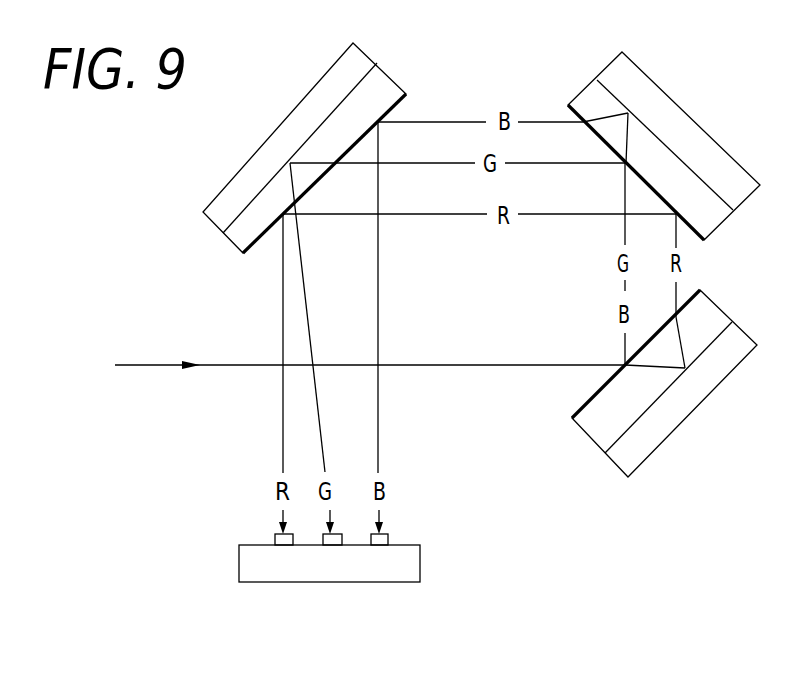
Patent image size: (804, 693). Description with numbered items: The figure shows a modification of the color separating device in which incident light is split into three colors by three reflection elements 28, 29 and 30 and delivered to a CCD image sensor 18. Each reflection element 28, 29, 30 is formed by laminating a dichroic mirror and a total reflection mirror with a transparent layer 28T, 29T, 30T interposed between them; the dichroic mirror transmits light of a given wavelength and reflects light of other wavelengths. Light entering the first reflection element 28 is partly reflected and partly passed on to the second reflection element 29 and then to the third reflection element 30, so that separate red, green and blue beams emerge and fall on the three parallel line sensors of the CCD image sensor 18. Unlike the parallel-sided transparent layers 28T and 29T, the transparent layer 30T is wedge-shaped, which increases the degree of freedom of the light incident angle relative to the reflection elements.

The CCD image sensor 18 is at (299, 583).
The reflection element 28 is at (703, 385).
The transparent layer 28T is at (592, 420).
The reflection element 29 is at (655, 98).
The transparent layer 29T is at (592, 103).
The reflection element 30 is at (277, 147).
The transparent layer 30T is at (377, 93).